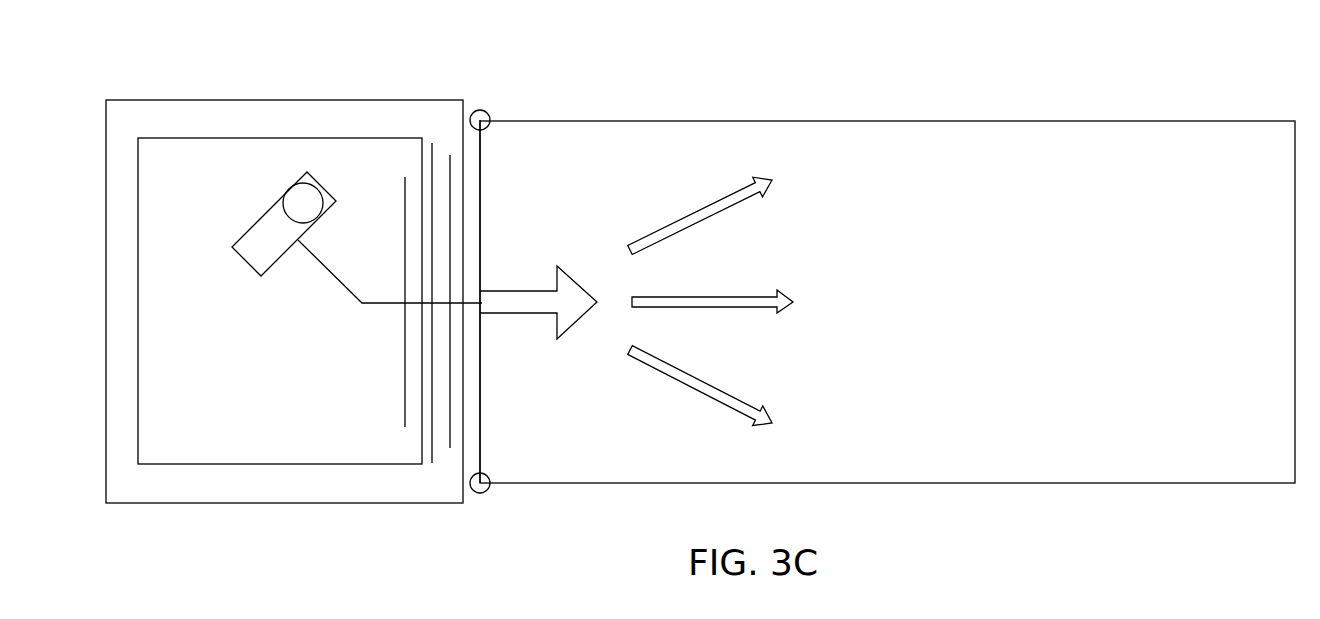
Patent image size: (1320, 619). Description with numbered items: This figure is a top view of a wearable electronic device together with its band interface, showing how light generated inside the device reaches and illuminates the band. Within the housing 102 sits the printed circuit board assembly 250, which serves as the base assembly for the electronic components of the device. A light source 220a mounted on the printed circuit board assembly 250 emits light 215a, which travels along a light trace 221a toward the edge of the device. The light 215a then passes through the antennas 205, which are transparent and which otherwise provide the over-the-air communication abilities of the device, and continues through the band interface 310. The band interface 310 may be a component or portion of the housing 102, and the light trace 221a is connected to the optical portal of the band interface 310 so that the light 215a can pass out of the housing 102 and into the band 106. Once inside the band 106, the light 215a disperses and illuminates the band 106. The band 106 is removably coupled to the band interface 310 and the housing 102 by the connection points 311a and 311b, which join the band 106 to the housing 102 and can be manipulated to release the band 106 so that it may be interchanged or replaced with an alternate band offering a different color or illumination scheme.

The housing 102 is at (393, 505).
The band 106 is at (1268, 461).
The printed circuit board assembly 250 is at (197, 176).
The antennas 205 is at (431, 168).
The light source 220a is at (247, 262).
The light trace 221a is at (338, 285).
The light 215a is at (633, 343).
The band interface 310 is at (466, 496).
The connection point 311a is at (488, 491).
The connection point 311b is at (486, 110).